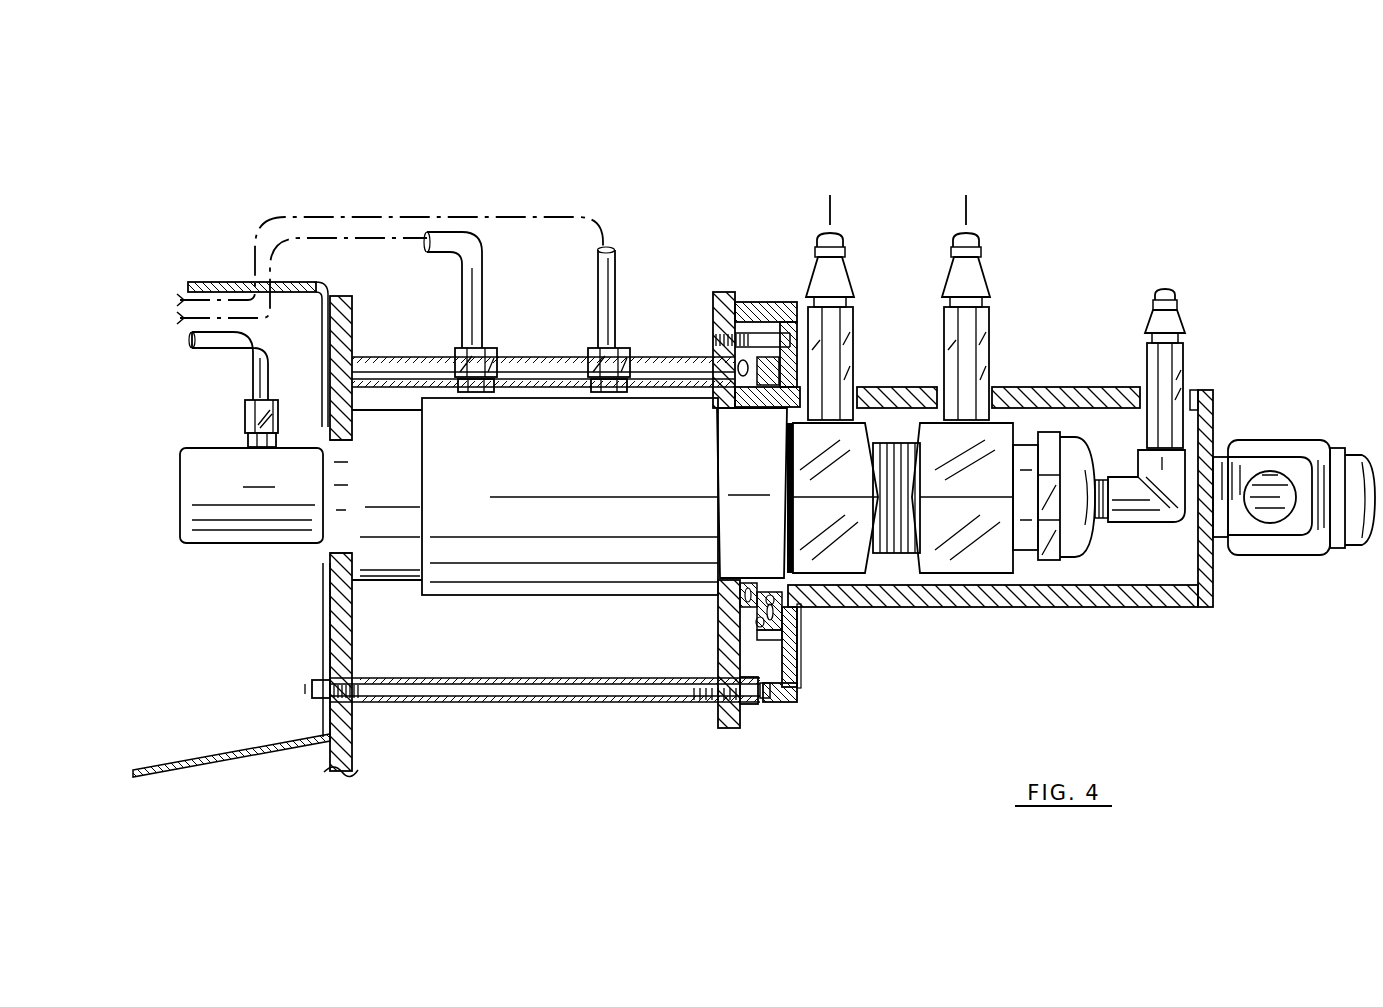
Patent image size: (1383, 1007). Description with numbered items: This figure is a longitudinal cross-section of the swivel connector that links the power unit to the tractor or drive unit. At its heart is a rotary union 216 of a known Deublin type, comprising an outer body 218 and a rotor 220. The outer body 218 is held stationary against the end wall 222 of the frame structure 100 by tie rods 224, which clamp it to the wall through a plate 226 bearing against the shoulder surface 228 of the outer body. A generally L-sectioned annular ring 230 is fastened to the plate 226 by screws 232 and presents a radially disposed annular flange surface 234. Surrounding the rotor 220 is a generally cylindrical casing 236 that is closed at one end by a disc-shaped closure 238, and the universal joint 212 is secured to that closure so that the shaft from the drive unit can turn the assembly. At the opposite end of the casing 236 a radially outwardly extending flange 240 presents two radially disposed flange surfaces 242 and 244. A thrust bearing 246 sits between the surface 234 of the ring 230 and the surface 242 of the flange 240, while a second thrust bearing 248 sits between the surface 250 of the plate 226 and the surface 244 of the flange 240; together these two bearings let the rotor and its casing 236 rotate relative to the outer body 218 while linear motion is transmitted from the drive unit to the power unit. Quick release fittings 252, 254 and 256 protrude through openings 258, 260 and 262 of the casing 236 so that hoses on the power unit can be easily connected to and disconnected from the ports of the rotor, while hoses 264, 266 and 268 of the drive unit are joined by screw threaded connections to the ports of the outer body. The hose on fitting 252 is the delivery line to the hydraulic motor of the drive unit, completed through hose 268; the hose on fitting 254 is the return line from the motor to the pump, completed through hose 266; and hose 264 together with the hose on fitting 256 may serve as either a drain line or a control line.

The frame structure 100 is at (245, 762).
The universal joint 212 is at (1282, 438).
The rotary union 216 is at (552, 418).
The outer body 218 is at (508, 572).
The rotor 220 is at (898, 557).
The end wall 222 is at (356, 742).
The tie rods 224 is at (515, 355).
The plate 226 is at (728, 735).
The shoulder surface 228 is at (722, 476).
The annular ring 230 is at (798, 653).
The screws 232 is at (762, 337).
The annular flange surface 234 is at (798, 636).
The casing 236 is at (1052, 604).
The disc-shaped closure 238 is at (1207, 600).
The flange 240 is at (766, 642).
The flange surface 242 is at (760, 625).
The flange surface 244 is at (768, 617).
The thrust bearing 246 is at (770, 614).
The thrust bearing 248 is at (746, 586).
The surface 250 is at (738, 378).
The quick release fitting 252 is at (853, 313).
The quick release fitting 254 is at (990, 313).
The quick release fitting 256 is at (1190, 347).
The opening 258 is at (858, 388).
The opening 260 is at (995, 388).
The opening 262 is at (1192, 392).
The hose 264 is at (268, 350).
The hose 266 is at (485, 262).
The hose 268 is at (620, 262).